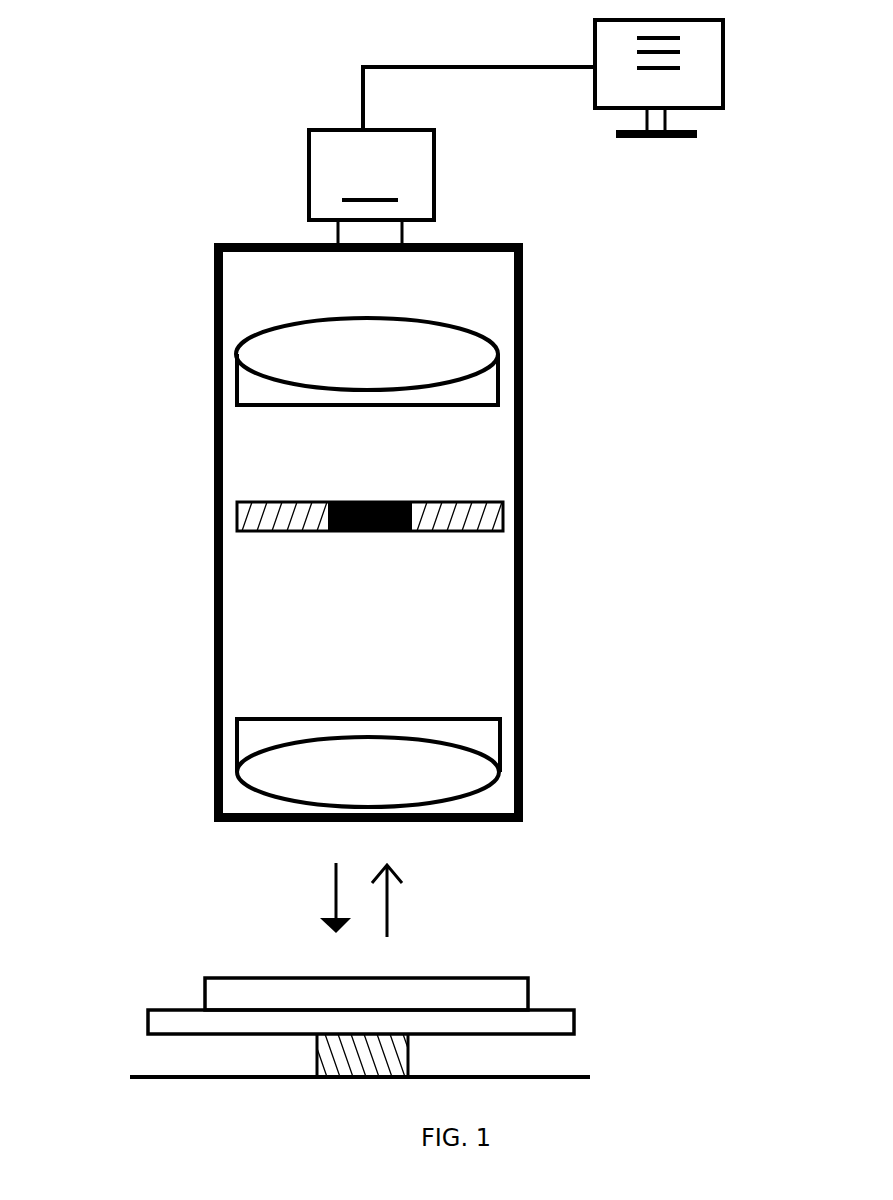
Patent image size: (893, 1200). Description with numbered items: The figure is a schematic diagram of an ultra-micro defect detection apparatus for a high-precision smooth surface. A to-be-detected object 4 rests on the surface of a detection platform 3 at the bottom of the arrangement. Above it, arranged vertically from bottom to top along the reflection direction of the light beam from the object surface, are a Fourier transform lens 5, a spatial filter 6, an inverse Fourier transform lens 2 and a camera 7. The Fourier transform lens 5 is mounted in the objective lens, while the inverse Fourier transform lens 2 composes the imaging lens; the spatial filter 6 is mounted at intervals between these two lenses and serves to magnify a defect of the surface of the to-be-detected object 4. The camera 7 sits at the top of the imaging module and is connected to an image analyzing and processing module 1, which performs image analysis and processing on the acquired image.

The image analyzing and processing module 1 is at (732, 83).
The inverse Fourier transform lens 2 is at (476, 325).
The detection platform 3 is at (581, 1007).
The to-be-detected object 4 is at (200, 973).
The Fourier transform lens 5 is at (258, 708).
The spatial filter 6 is at (235, 517).
The camera 7 is at (300, 164).